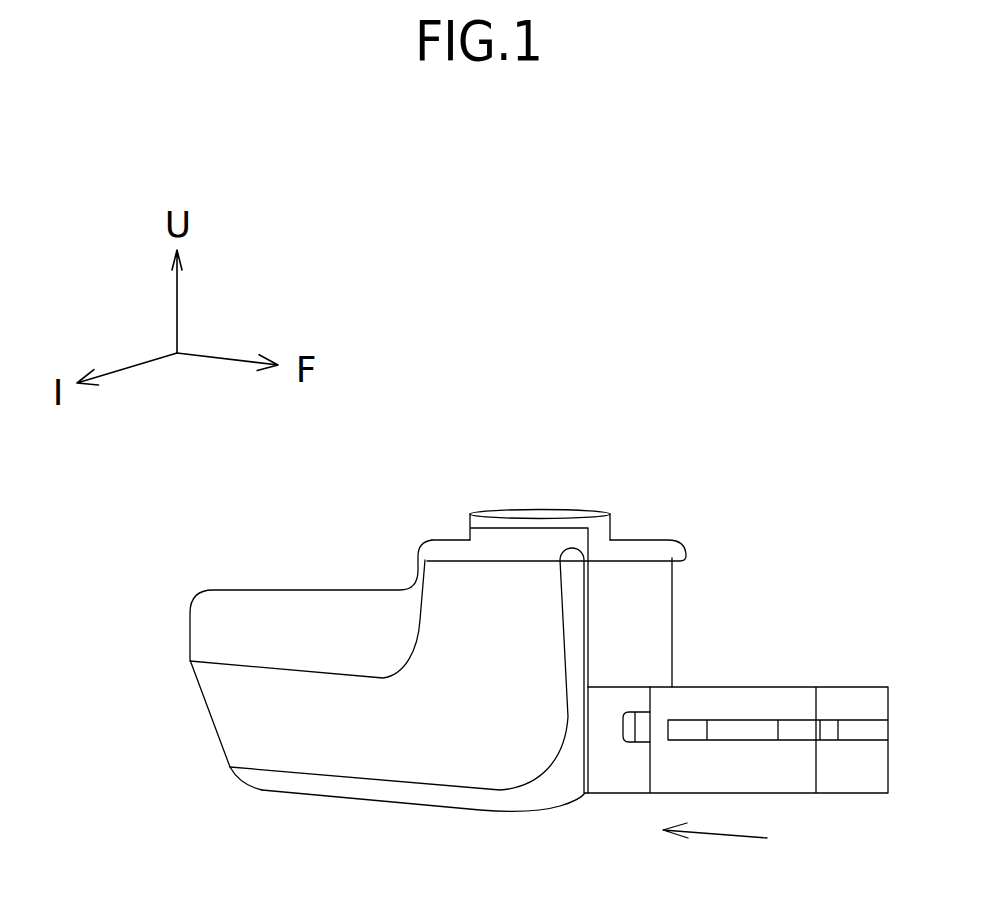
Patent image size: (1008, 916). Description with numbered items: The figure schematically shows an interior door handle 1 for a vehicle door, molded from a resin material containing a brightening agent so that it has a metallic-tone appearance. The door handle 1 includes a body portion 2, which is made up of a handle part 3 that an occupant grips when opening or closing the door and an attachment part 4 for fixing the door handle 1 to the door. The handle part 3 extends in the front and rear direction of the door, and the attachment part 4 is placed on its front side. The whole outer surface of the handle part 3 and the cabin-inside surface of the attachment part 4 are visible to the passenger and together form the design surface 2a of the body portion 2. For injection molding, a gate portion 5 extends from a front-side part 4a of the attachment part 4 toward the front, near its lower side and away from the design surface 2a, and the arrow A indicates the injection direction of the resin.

The door handle 1 is at (380, 512).
The body portion 2 is at (522, 520).
The design surface 2a is at (325, 737).
The handle part 3 is at (232, 602).
The attachment part 4 is at (645, 610).
The front-side part 4a is at (648, 638).
The gate portion 5 is at (622, 743).
The injection direction A is at (732, 840).